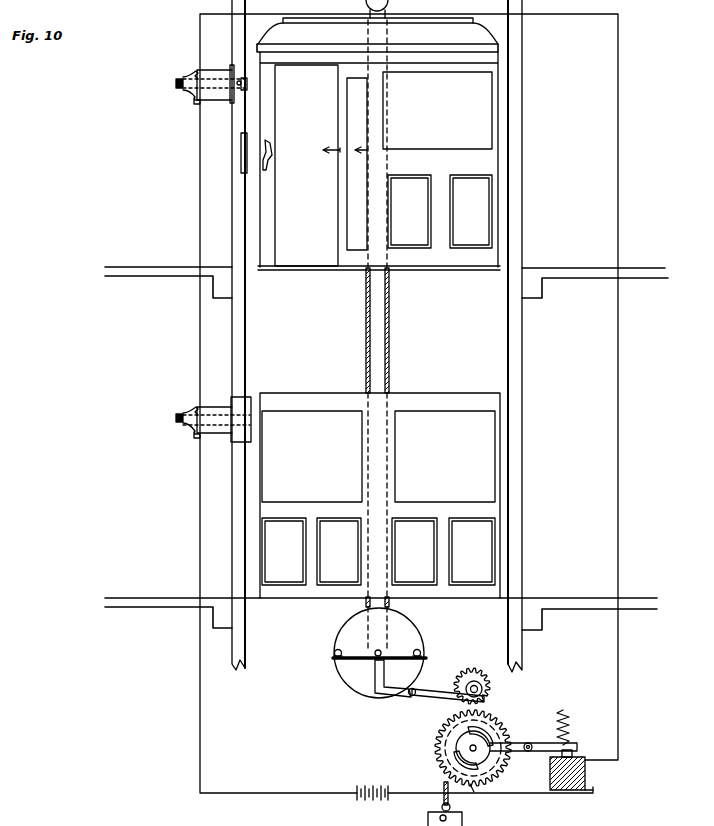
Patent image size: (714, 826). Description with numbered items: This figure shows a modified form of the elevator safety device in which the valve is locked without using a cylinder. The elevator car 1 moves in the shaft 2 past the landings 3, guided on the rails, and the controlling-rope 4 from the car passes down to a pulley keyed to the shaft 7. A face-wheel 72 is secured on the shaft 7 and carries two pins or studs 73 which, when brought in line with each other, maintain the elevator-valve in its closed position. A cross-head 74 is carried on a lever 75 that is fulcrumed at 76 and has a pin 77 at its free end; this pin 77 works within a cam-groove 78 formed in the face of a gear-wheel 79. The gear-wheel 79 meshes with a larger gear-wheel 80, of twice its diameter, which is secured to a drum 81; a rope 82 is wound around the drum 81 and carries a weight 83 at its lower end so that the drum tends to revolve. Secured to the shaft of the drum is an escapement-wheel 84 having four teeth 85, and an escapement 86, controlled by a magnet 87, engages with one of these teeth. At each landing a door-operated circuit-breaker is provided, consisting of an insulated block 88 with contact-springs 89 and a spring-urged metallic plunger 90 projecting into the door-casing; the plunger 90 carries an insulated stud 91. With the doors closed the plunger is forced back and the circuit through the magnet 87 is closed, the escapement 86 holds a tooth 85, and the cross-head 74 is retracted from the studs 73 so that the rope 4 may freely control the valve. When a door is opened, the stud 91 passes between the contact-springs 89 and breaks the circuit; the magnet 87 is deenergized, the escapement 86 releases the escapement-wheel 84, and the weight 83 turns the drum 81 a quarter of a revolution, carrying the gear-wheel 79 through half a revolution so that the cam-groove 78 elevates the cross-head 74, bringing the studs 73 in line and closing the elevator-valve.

The elevator car 1 is at (326, 248).
The shaft 2 is at (377, 336).
The landings 3 is at (386, 440).
The controlling-rope 4 is at (383, 335).
The shaft 7 is at (375, 651).
The face-wheel 72 is at (379, 653).
The pins or studs 73 is at (334, 651).
The cross-head 74 is at (360, 662).
The lever 75 is at (391, 688).
The fulcrum 76 is at (416, 690).
The pin 77 is at (488, 700).
The cam-groove 78 is at (483, 690).
The gear-wheel 79 is at (476, 668).
The gear-wheel 80 is at (448, 722).
The drum 81 is at (462, 732).
The rope 82 is at (435, 791).
The weight 83 is at (445, 819).
The escapement-wheel 84 is at (473, 786).
The teeth 85 is at (456, 750).
The escapement 86 is at (514, 745).
The magnet 87 is at (586, 765).
The insulated block 88 is at (210, 68).
The contact-springs 89 is at (194, 70).
The metallic plunger 90 is at (176, 84).
The insulated stud 91 is at (193, 408).